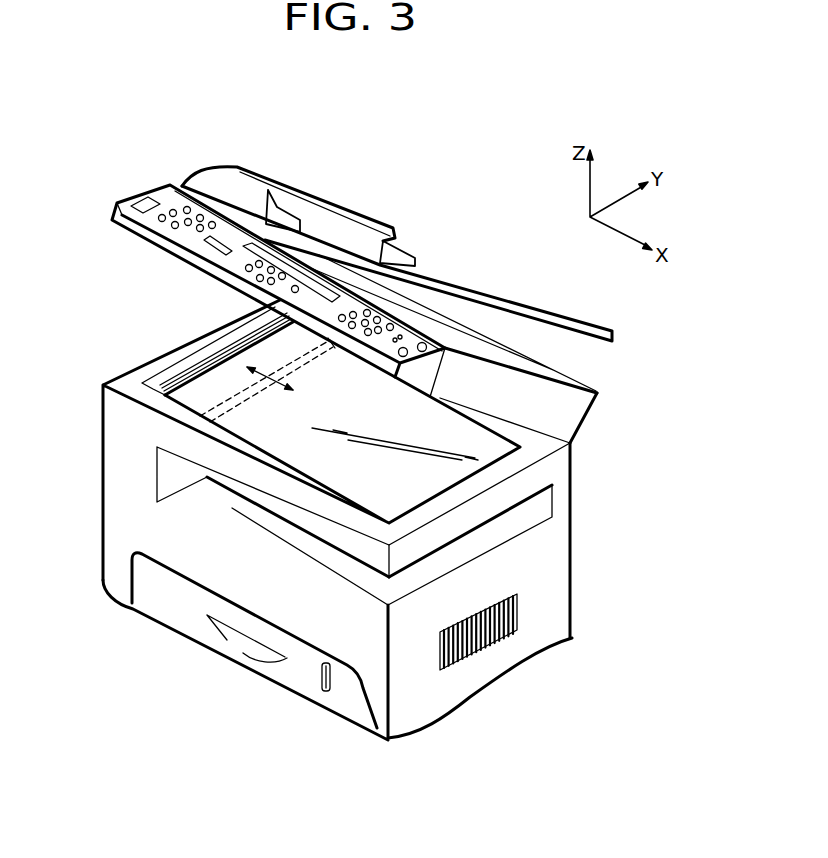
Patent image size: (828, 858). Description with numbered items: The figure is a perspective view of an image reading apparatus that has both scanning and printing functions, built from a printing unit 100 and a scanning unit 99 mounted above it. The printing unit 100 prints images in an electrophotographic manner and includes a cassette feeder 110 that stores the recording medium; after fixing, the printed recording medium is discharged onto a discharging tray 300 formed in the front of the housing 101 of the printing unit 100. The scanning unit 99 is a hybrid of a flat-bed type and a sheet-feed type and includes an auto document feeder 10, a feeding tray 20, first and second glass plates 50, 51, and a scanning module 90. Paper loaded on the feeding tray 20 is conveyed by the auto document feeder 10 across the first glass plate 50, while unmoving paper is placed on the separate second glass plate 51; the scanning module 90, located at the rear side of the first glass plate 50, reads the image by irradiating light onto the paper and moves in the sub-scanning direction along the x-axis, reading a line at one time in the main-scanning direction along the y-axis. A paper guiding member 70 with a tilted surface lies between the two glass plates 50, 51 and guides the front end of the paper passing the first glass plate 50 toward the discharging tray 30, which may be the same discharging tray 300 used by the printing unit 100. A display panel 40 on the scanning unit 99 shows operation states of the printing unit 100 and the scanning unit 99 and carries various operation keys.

The auto document feeder 10 is at (328, 203).
The feeding tray 20 is at (475, 292).
The discharging tray 30 is at (523, 345).
The display panel 40 is at (162, 200).
The first glass plate 50 is at (193, 360).
The second glass plate 51 is at (440, 484).
The paper guiding member 70 is at (178, 381).
The scanning module 90 is at (245, 387).
The scanning unit 99 is at (609, 396).
The printing unit 100 is at (600, 546).
The main body housing 101 is at (560, 577).
The cassette feeder 110 is at (308, 673).
The discharging tray 300 is at (232, 508).